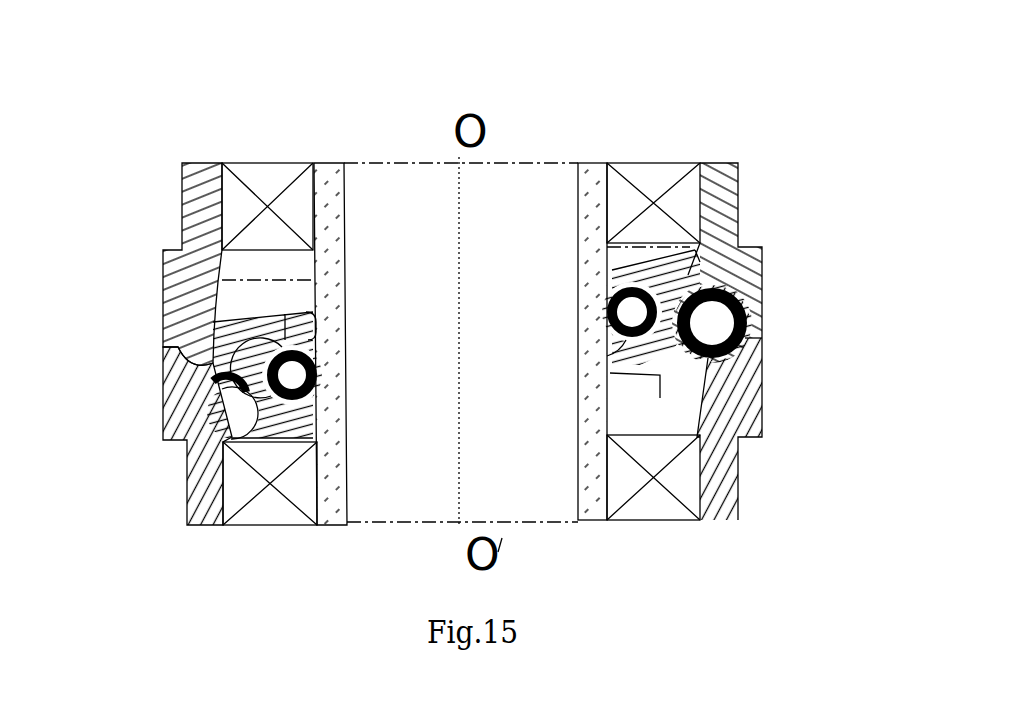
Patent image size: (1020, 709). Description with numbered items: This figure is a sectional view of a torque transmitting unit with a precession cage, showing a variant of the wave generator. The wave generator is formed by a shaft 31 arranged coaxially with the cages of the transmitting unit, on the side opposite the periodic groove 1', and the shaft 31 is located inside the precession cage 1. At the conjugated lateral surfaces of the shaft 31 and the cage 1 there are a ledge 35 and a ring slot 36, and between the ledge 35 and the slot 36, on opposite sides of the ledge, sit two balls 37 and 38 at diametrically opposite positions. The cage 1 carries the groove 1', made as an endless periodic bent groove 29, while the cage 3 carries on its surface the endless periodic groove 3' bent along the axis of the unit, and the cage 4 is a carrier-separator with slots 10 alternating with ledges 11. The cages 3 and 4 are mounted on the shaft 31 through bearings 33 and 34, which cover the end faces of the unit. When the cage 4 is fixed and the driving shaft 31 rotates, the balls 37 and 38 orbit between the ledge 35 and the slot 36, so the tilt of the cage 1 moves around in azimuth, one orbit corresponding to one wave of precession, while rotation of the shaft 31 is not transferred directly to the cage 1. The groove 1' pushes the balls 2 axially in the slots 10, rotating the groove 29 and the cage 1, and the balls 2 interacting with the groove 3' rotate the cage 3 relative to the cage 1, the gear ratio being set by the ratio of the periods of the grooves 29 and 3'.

The cage of the wave generator 1 is at (677, 208).
The periodic groove 1' is at (759, 168).
The balls 2 is at (728, 318).
The cage 3 is at (766, 402).
The periodic groove 3' is at (152, 435).
The cage 4 is at (763, 245).
The slots 10 is at (765, 270).
The ledges 11 is at (170, 330).
The periodic bent groove 29 is at (195, 455).
The shaft 31 is at (335, 513).
The bearing 33 is at (260, 515).
The bearing 34 is at (262, 178).
The ledge 35 is at (308, 350).
The slot 36 is at (660, 398).
The ball 37 is at (630, 308).
The ball 38 is at (305, 374).